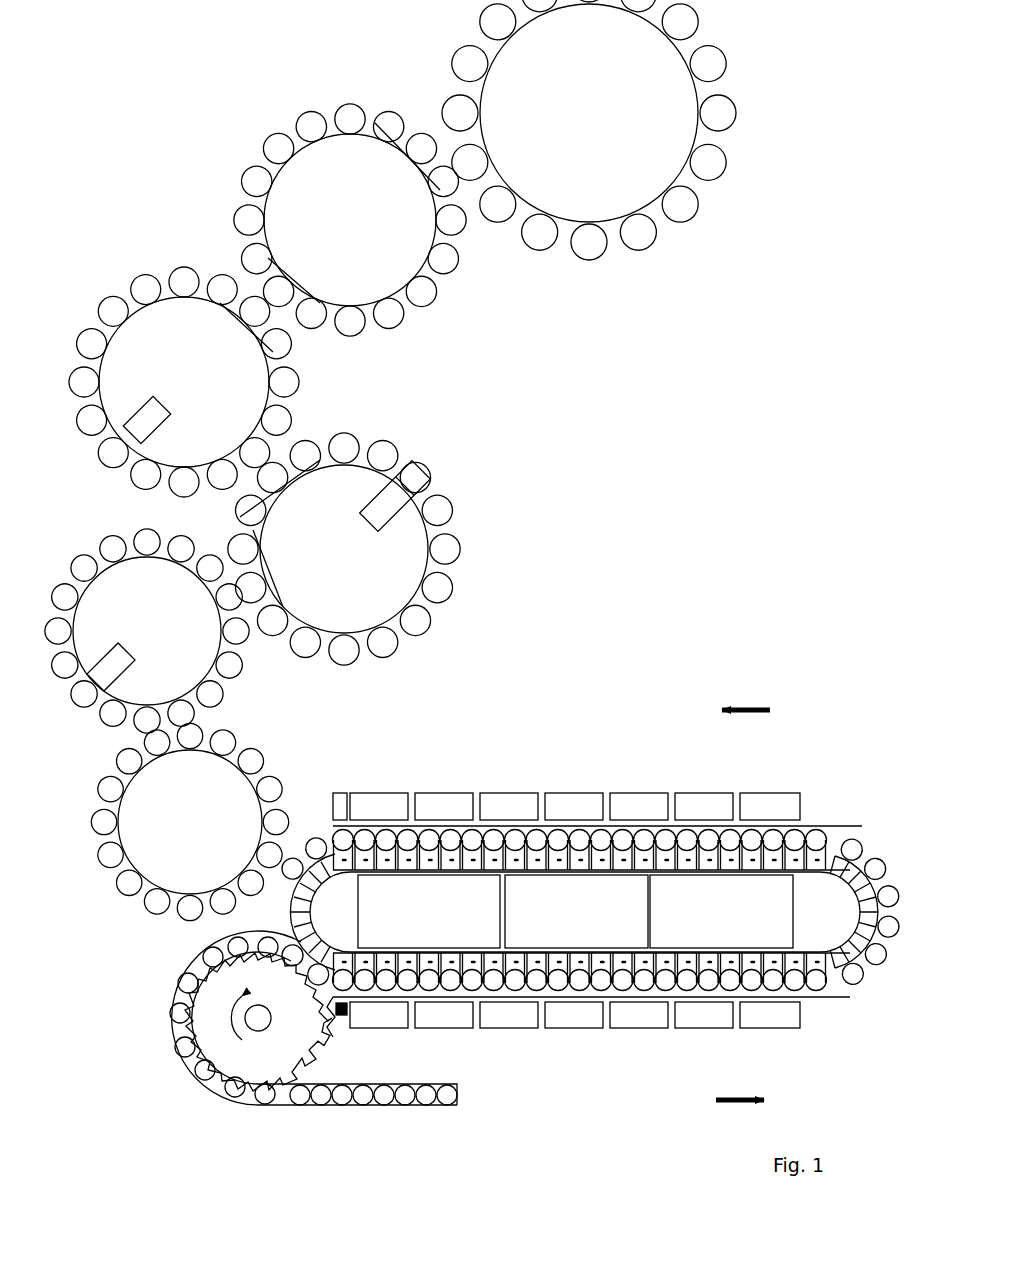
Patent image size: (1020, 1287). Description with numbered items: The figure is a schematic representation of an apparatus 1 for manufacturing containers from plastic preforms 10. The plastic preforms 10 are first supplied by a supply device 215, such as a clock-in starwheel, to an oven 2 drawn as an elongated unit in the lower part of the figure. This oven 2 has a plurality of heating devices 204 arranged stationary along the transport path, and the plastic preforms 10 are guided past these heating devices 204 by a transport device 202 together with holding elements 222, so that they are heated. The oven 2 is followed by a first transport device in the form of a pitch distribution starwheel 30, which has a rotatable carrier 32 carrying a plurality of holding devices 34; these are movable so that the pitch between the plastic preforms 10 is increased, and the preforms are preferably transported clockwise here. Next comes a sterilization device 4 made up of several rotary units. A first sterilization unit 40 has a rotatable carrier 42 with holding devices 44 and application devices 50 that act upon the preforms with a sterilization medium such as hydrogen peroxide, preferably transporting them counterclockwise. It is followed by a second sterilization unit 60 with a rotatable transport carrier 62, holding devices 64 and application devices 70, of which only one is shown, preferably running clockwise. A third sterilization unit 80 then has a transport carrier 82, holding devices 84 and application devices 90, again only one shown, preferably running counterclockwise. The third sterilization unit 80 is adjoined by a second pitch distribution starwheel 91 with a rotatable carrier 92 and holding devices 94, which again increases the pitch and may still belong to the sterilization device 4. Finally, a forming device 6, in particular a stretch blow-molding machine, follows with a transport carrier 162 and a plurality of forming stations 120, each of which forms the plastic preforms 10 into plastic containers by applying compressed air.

The apparatus 1 is at (616, 456).
The oven 2 is at (631, 700).
The sterilization device 4 is at (492, 633).
The forming device 6 is at (750, 144).
The plastic preforms 10 is at (862, 968).
The pitch distribution starwheel 30 is at (120, 901).
The fifth drum 32 is at (190, 822).
The holding devices 34 is at (150, 908).
The first sterilization unit 40 is at (94, 552).
The rotatable carrier 42 is at (147, 631).
The holding devices 44 is at (128, 708).
The application devices 50 is at (98, 668).
The second sterilization unit 60 is at (438, 480).
The rotatable transport carrier 62 is at (344, 549).
The holding devices 64 is at (453, 555).
The application devices 70 is at (385, 502).
The third sterilization unit 80 is at (132, 260).
The transport carrier 82 is at (184, 382).
The holding devices 84 is at (95, 425).
The application devices 90 is at (118, 410).
The second pitch distribution starwheel 91 is at (290, 124).
The rotatable carrier 92 is at (350, 220).
The holding devices 94 is at (252, 185).
The forming stations 120 is at (722, 62).
The transport carrier 162 is at (589, 113).
The transport device 202 is at (835, 920).
The heating devices 204 is at (775, 793).
The supply device 215 is at (208, 1107).
The holding elements 222 is at (872, 874).